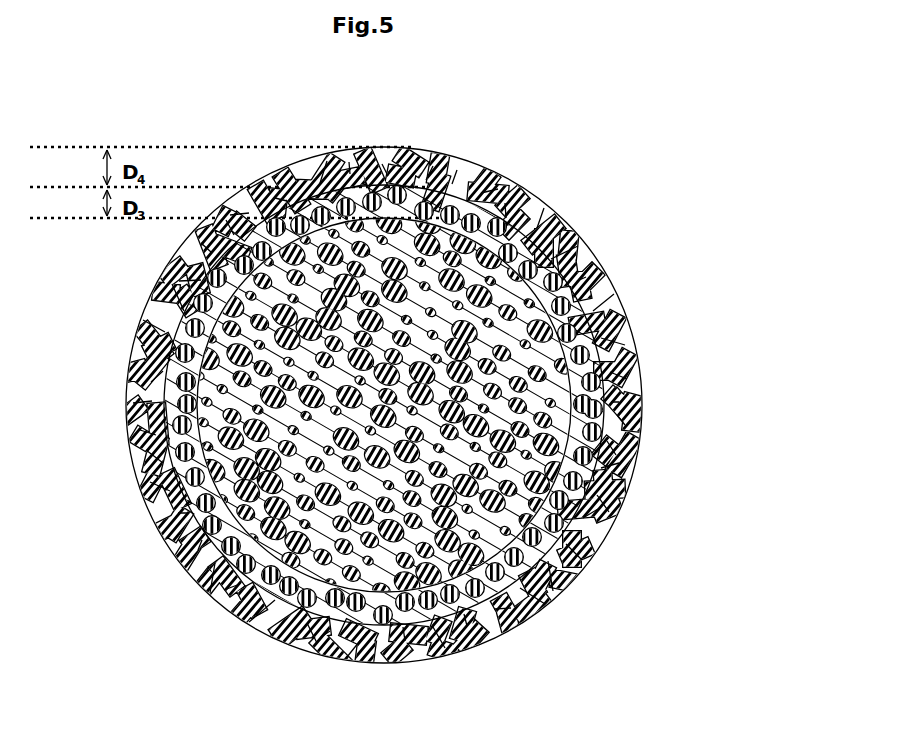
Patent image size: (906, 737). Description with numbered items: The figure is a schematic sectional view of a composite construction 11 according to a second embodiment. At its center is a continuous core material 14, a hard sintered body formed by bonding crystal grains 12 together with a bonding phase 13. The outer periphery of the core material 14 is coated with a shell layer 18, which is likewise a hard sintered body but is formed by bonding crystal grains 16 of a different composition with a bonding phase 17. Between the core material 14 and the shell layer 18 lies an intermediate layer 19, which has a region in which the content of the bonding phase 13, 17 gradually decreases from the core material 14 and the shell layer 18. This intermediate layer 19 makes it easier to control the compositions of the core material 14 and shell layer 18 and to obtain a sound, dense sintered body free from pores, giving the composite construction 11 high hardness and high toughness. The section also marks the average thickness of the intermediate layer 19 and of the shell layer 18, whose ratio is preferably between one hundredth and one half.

The composite construction 11 is at (589, 212).
The crystal grains 12 is at (573, 397).
The bonding phase 13 is at (580, 490).
The core material 14 is at (456, 405).
The crystal grains 16 is at (600, 375).
The bonding phase 17 is at (600, 412).
The shell layer 18 is at (414, 405).
The intermediate layer 19 is at (583, 538).